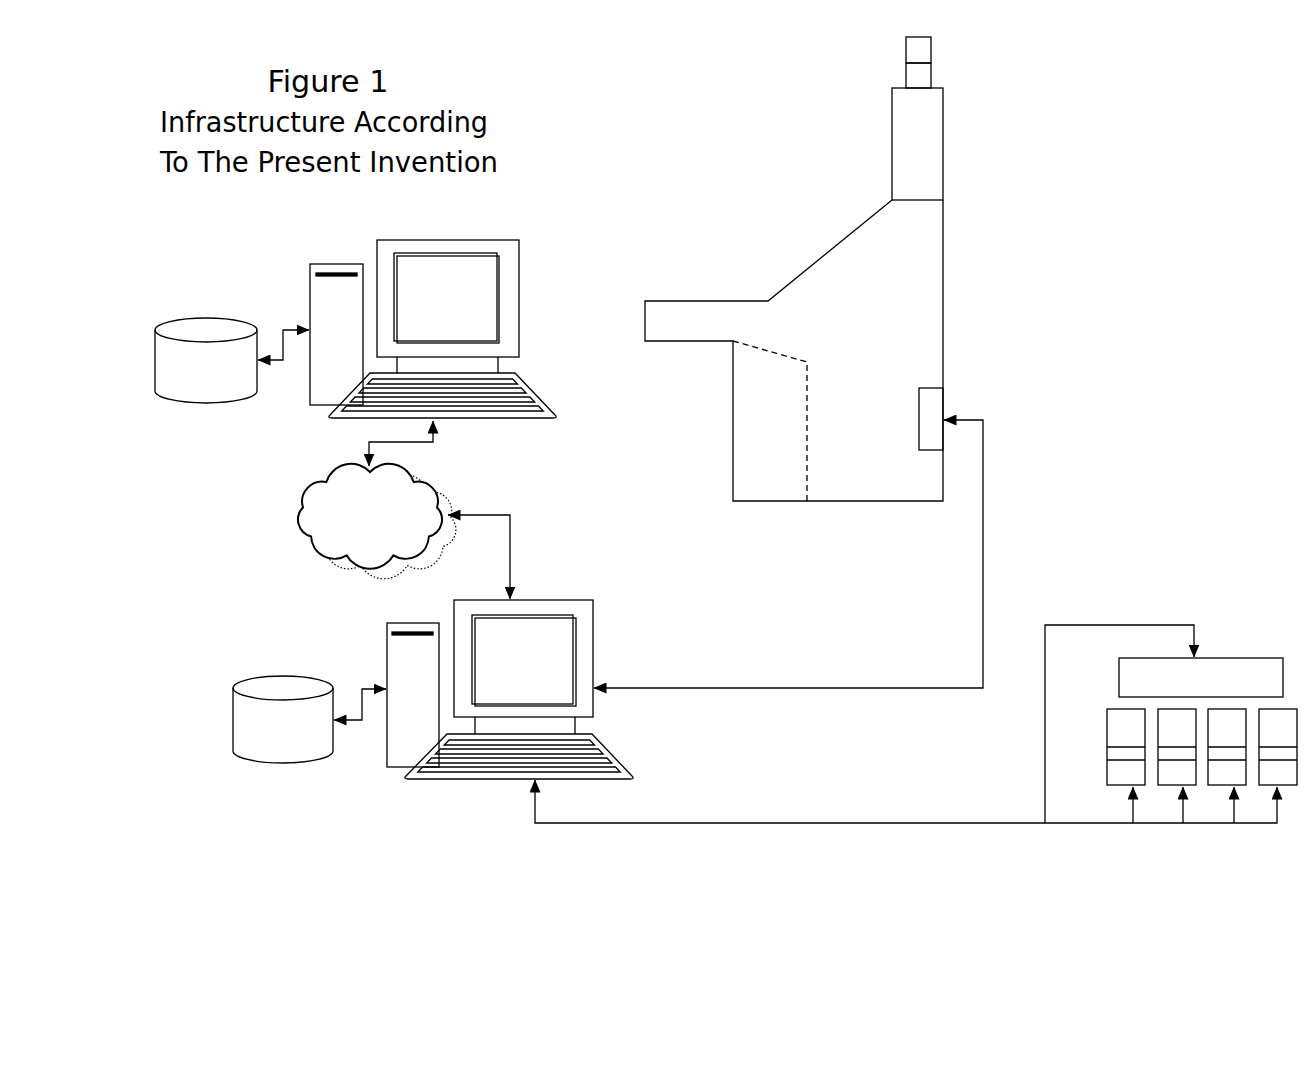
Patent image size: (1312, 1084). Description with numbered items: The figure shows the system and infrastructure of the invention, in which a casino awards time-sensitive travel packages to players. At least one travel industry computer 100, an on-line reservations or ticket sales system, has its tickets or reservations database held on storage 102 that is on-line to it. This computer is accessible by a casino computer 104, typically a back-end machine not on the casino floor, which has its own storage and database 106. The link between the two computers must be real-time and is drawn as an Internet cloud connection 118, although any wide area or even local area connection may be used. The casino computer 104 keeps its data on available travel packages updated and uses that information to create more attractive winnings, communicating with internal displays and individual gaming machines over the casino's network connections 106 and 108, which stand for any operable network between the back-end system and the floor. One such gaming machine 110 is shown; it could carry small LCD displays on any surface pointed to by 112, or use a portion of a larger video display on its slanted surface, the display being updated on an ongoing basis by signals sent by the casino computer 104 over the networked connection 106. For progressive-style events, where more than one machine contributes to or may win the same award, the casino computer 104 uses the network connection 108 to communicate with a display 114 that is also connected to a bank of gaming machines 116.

The travel industry computer 100 is at (520, 260).
The storage 102 is at (212, 327).
The casino computer 104 is at (594, 622).
The storage and database / network connection 106 is at (280, 688).
The network connection 108 is at (782, 823).
The gaming machine 110 is at (944, 280).
The display surfaces 112 is at (877, 163).
The display 114 is at (1245, 670).
The bank of gaming machines 116 is at (1107, 785).
The Internet cloud connection 118 is at (437, 483).